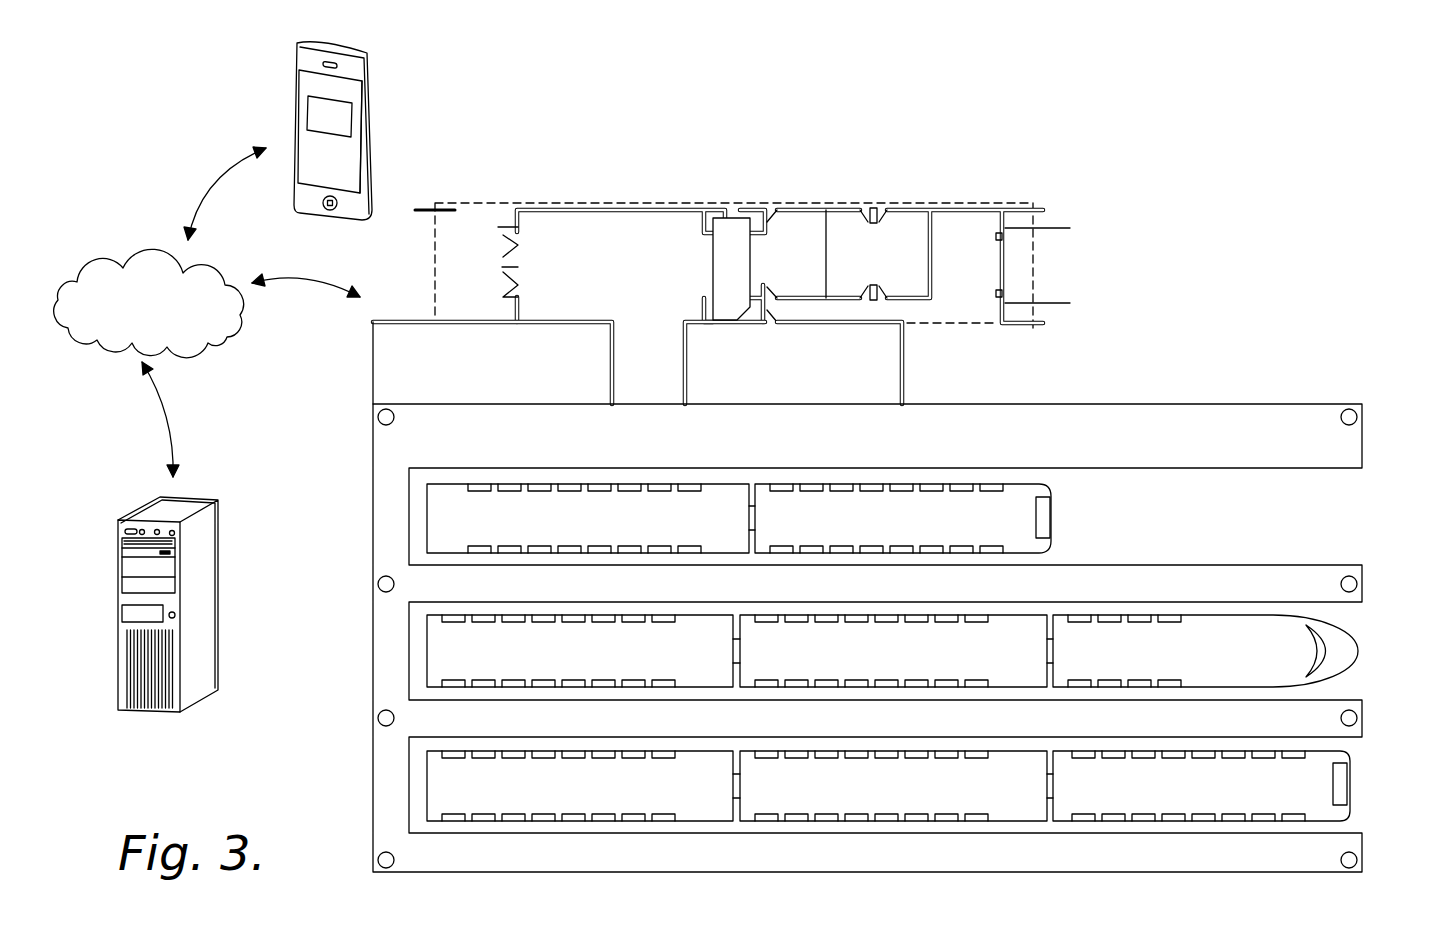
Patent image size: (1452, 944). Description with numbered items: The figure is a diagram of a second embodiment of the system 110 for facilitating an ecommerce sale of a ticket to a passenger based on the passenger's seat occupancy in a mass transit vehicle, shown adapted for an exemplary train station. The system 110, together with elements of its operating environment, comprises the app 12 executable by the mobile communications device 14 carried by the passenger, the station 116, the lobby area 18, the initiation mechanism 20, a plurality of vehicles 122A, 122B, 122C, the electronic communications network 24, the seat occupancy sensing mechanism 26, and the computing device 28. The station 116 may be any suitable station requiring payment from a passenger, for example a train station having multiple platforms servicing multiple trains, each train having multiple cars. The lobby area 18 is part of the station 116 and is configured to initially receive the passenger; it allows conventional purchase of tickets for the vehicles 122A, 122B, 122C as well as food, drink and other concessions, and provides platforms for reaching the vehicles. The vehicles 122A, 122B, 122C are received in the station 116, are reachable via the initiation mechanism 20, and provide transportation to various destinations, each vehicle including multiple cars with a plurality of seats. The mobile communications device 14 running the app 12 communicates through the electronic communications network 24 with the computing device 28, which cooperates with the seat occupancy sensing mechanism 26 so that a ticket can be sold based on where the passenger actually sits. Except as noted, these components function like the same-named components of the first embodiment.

The app 12 is at (320, 110).
The mobile communications device 14 is at (362, 167).
The system 110 is at (378, 131).
The electronic communications network 24 is at (194, 306).
The computing device 28 is at (205, 613).
The station 116 is at (721, 250).
The lobby area 18 is at (662, 250).
The initiation mechanism 20 is at (657, 350).
The seat occupancy sensing mechanism 26 is at (410, 430).
The vehicle 122A is at (1066, 519).
The vehicle 122B is at (1378, 641).
The vehicle 122C is at (1372, 782).